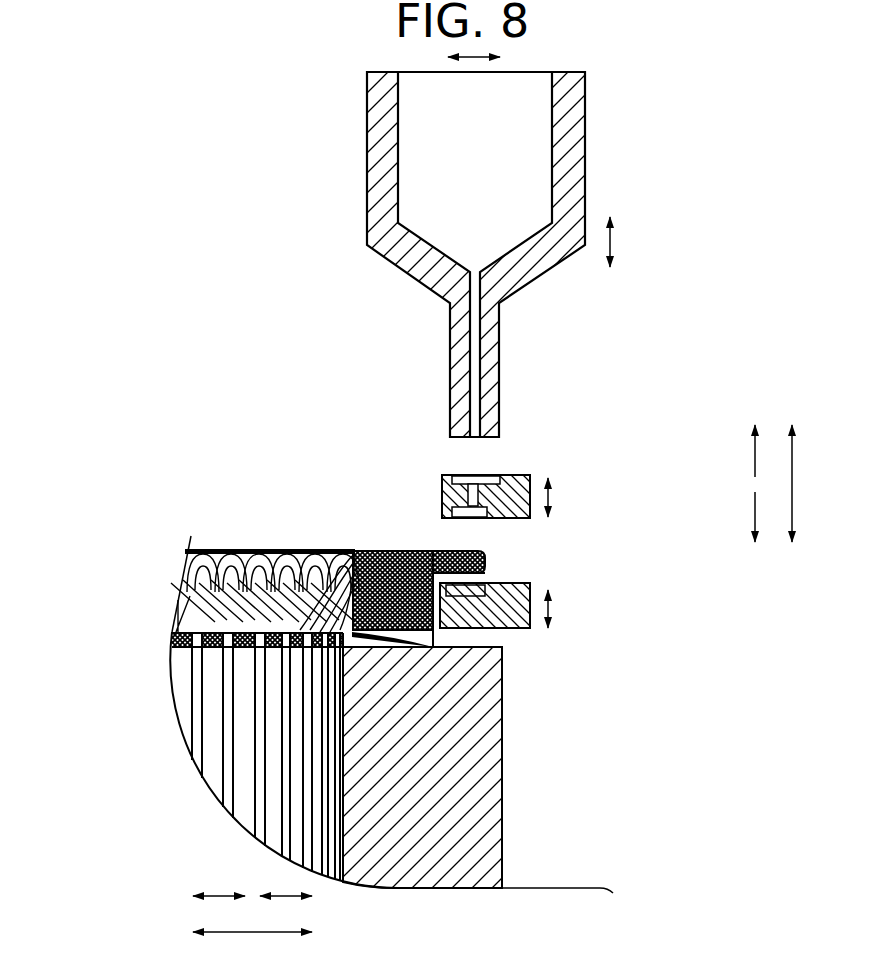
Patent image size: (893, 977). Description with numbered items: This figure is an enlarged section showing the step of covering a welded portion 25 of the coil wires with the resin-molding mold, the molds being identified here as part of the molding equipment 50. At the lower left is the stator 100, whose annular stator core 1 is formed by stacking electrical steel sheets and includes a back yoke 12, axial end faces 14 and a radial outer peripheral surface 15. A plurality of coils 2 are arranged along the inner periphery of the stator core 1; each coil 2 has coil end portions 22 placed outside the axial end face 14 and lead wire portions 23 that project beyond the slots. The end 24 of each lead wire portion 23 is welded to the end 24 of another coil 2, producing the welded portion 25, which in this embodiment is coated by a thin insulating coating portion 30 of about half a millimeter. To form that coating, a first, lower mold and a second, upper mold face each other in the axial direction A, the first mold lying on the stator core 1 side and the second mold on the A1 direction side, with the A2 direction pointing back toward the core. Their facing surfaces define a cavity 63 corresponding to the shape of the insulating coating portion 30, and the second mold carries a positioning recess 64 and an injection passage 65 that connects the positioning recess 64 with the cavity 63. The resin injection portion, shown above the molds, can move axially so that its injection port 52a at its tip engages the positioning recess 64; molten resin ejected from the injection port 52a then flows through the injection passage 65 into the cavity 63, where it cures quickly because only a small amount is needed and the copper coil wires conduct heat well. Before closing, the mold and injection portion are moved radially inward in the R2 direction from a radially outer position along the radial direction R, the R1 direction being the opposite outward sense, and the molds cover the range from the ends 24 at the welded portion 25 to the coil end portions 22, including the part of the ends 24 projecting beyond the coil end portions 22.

The coating device (nozzle unit) 50 is at (233, 125).
The injection port 52a is at (475, 447).
The positioning recess 64 is at (448, 474).
The injection passage 65 is at (465, 497).
The cavity 63 is at (452, 514).
The stator 100 is at (196, 533).
The stator core 1 is at (542, 733).
The radial outer peripheral surface 15 is at (503, 755).
The back yoke 12 is at (512, 797).
The axial end face 14 is at (498, 638).
The coil 2 is at (265, 542).
The coil end portion 22 is at (278, 573).
The lead wire portion 23 is at (382, 550).
The end 24 is at (446, 548).
The insulating coating portion 30 is at (487, 560).
The welded portion 25 is at (487, 568).
The axial direction A is at (803, 483).
The A1 direction A1 is at (772, 452).
The A2 direction A2 is at (772, 517).
The radial direction R is at (252, 947).
The R1 direction R1 is at (285, 910).
The R2 direction R2 is at (219, 910).